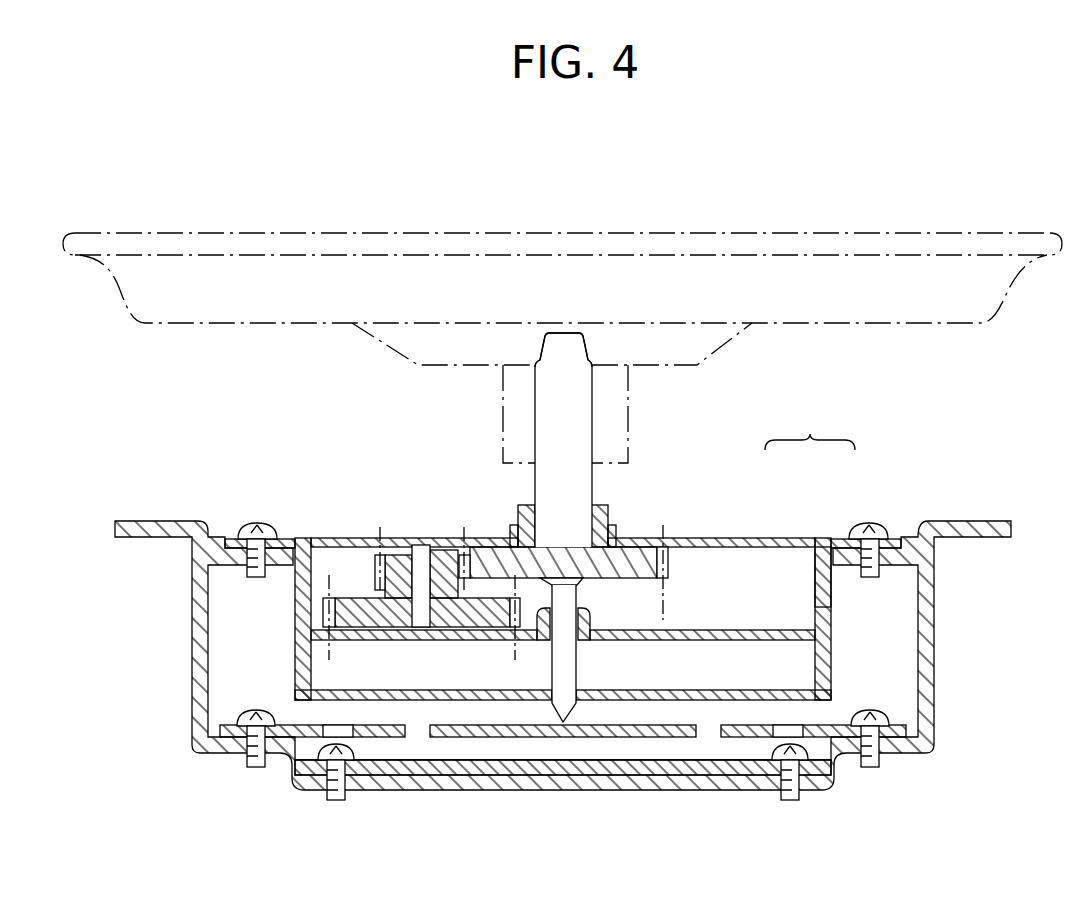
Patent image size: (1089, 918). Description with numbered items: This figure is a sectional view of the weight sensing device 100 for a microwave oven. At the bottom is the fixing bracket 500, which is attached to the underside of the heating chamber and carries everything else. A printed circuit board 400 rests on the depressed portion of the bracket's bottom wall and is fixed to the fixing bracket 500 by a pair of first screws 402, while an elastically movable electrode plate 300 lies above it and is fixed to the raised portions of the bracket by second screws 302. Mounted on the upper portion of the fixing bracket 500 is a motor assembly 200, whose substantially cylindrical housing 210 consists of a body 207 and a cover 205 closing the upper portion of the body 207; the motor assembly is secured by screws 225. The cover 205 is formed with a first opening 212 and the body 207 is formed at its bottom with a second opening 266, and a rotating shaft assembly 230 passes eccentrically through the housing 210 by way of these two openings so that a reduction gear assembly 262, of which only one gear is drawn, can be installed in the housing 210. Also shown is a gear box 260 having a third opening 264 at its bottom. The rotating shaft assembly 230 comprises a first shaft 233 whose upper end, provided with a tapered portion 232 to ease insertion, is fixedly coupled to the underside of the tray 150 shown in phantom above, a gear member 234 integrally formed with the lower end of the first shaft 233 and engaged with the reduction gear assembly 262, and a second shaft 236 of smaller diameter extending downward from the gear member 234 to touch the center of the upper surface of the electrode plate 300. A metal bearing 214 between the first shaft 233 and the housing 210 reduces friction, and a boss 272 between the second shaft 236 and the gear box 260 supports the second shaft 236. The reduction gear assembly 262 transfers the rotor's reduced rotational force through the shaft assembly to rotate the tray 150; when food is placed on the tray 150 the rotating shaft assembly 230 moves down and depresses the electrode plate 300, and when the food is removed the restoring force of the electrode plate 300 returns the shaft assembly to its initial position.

The weight sensing device 100 is at (254, 418).
The tray 150 is at (830, 277).
The motor assembly 200 is at (625, 608).
The cover 205 is at (768, 540).
The body 207 is at (832, 542).
The housing 210 is at (810, 426).
The first opening 212 is at (518, 522).
The metal bearing 214 is at (608, 522).
The fastening screws 225 is at (257, 522).
The rotating shaft assembly 230 is at (590, 346).
The tapered portion 232 is at (543, 347).
The first shaft 233 is at (562, 365).
The gear member 234 is at (627, 555).
The second shaft 236 is at (567, 667).
The gear box 260 is at (817, 603).
The reduction gear assembly 262 is at (402, 573).
The third opening 264 is at (545, 644).
The second opening 266 is at (558, 694).
The boss 272 is at (587, 620).
The elastically movable electrode plate 300 is at (610, 737).
The second screws 302 is at (258, 768).
The printed circuit board 400 is at (457, 770).
The first screws 402 is at (337, 800).
The fixing bracket 500 is at (177, 639).